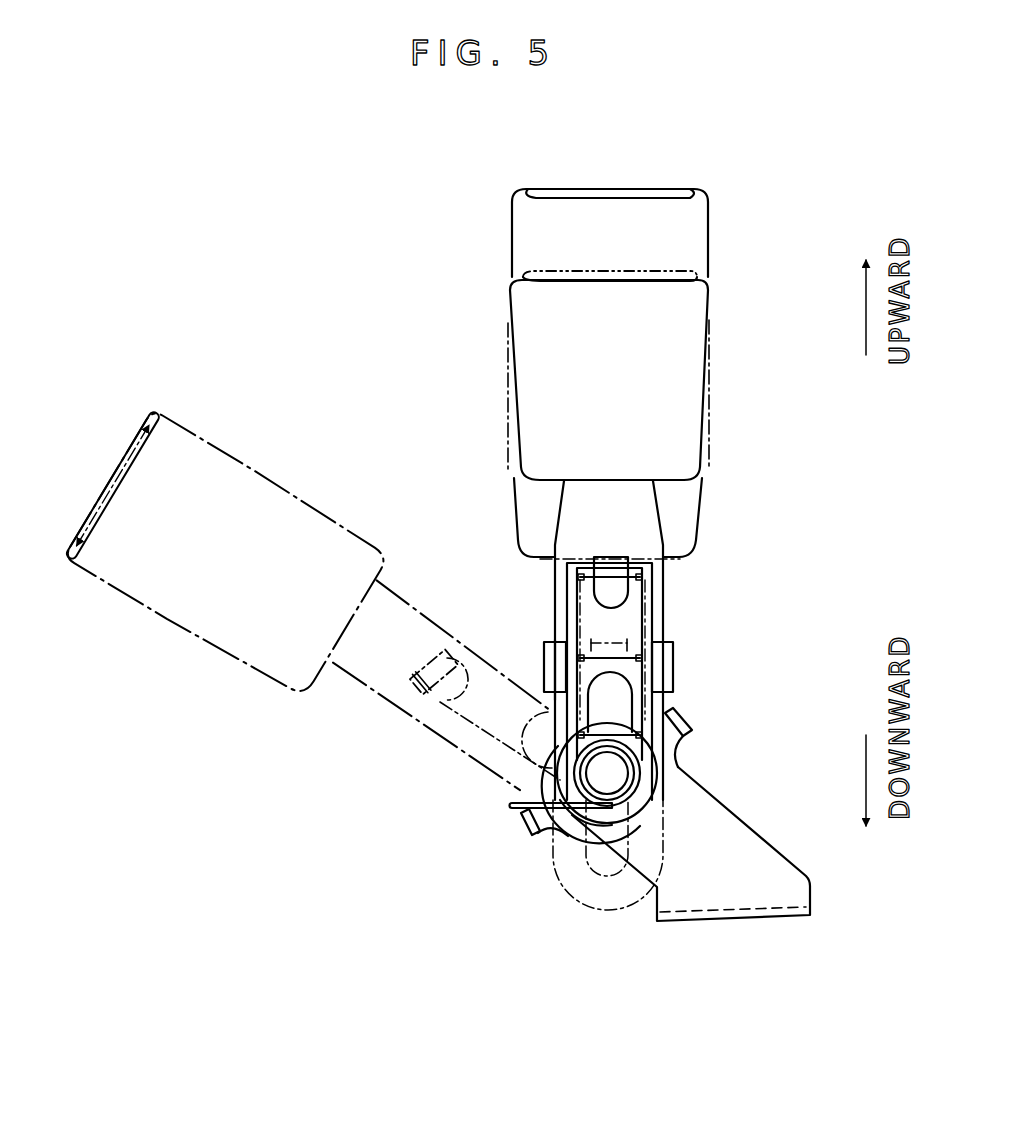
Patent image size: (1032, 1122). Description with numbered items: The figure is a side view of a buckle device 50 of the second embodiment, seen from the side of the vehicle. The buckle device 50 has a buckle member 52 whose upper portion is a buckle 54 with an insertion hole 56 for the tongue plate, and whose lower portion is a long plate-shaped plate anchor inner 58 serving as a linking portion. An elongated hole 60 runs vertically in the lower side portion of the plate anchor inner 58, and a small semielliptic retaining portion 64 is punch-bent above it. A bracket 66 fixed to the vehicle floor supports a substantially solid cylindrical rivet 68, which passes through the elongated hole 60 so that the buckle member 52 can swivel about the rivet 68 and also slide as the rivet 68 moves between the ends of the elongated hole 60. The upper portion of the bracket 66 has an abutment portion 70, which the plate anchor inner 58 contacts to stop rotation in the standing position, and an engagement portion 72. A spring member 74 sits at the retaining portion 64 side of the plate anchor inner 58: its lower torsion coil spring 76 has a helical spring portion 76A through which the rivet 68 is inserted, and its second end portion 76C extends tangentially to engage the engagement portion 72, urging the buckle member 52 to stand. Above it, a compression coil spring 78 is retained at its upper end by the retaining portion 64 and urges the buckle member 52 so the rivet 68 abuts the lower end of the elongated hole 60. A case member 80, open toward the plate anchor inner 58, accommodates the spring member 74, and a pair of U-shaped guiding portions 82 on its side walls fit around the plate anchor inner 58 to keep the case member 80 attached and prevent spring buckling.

The buckle device 50 is at (380, 293).
The buckle member 52 is at (707, 196).
The buckle 54 is at (708, 262).
The insertion hole 56 is at (625, 190).
The plate anchor inner 58 is at (660, 526).
The elongated hole 60 is at (640, 707).
The retaining portion 64 is at (625, 560).
The bracket 66 is at (757, 833).
The rivet 68 is at (608, 774).
The abutment portion 70 is at (693, 730).
The engagement portion 72 is at (530, 832).
The spring member 74 is at (646, 607).
The torsion coil spring 76 is at (665, 757).
The spring portion 76A is at (640, 825).
The second end portion 76C is at (510, 806).
The compression coil spring 78 is at (580, 586).
The case member 80 is at (566, 623).
The guiding portions 82 is at (675, 678).